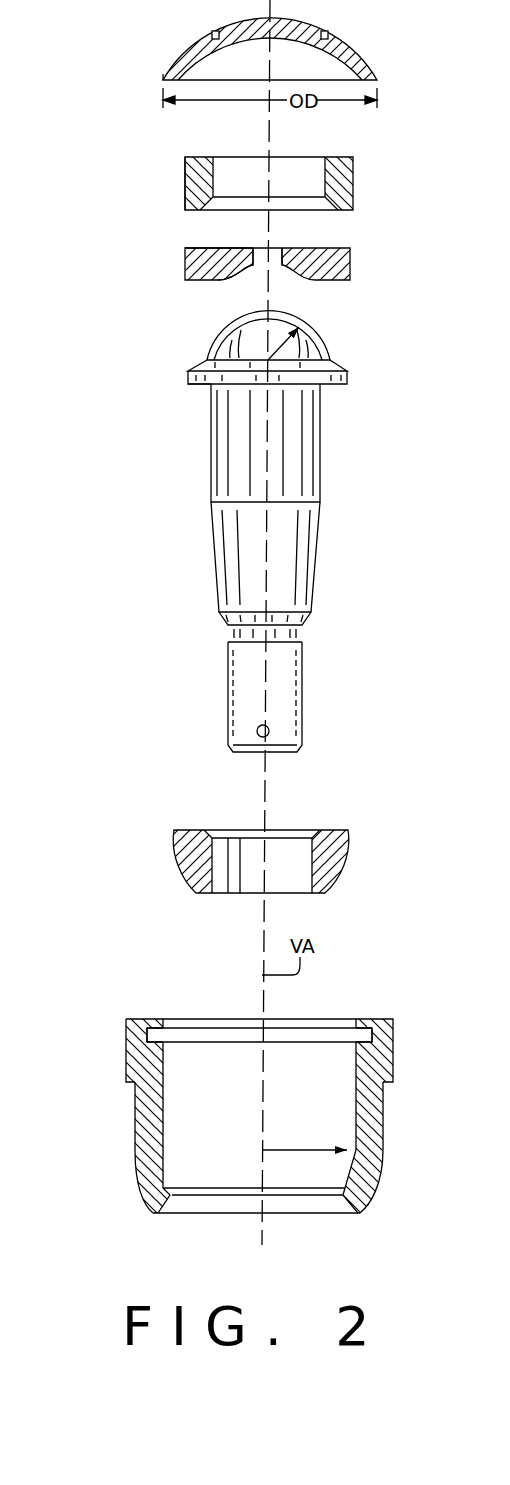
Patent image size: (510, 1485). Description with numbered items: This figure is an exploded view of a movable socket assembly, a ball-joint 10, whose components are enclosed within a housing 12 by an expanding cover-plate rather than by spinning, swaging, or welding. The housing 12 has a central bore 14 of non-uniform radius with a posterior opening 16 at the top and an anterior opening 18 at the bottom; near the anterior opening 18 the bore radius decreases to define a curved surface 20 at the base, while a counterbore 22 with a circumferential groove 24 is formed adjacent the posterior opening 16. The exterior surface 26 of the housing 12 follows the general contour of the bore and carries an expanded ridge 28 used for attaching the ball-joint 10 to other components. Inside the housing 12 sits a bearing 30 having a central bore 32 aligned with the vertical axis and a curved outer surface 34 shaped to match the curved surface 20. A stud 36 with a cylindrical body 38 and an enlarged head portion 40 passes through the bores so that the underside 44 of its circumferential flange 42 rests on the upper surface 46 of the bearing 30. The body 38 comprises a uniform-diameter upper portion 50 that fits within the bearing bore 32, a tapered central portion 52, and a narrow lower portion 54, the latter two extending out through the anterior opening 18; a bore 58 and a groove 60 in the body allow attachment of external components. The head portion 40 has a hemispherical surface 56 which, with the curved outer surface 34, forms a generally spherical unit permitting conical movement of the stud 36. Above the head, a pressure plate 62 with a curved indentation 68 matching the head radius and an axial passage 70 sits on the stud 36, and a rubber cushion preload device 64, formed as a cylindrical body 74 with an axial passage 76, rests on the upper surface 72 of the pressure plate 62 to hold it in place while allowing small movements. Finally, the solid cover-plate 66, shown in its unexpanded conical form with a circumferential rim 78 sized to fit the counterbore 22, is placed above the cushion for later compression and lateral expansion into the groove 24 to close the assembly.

The ball-joint 10 is at (374, 497).
The housing 12 is at (263, 1098).
The central bore 14 is at (318, 1072).
The posterior opening 16 is at (307, 1018).
The anterior opening 18 is at (283, 1228).
The curved surface 20 is at (345, 1181).
The counterbore 22 is at (355, 1028).
The circumferential groove 24 is at (153, 1040).
The exterior surface 26 is at (135, 1139).
The expanded ridge 28 is at (126, 1060).
The bearing 30 is at (264, 853).
The central bore 32 is at (290, 874).
The curved outer surface 34 is at (181, 862).
The stud 36 is at (249, 528).
The cylindrical body 38 is at (389, 473).
The head portion 40 is at (267, 332).
The circumferential flange 42 is at (347, 373).
The underside 44 is at (198, 390).
The upper surface 46 is at (331, 828).
The upper portion 50 is at (327, 432).
The central portion 52 is at (318, 557).
The lower portion 54 is at (263, 697).
The hemispherical surface 56 is at (216, 338).
The bore 58 is at (268, 725).
The groove 60 is at (227, 688).
The pressure plate 62 is at (304, 270).
The rubber cushion preload device 64 is at (287, 167).
The solid cover-plate 66 is at (367, 36).
The curved indentation 68 is at (253, 276).
The axial passage 70 is at (276, 256).
The upper surface 72 is at (201, 248).
The cylindrical body 74 is at (198, 157).
The axial passage 76 is at (303, 167).
The circumferential rim 78 is at (156, 77).